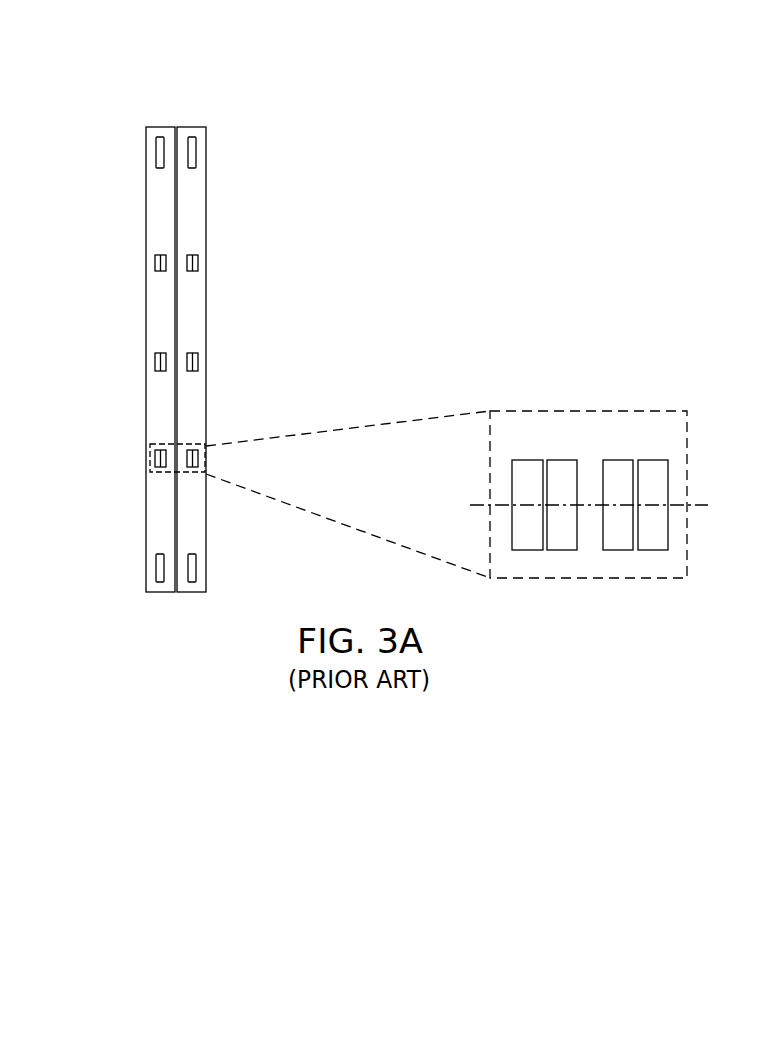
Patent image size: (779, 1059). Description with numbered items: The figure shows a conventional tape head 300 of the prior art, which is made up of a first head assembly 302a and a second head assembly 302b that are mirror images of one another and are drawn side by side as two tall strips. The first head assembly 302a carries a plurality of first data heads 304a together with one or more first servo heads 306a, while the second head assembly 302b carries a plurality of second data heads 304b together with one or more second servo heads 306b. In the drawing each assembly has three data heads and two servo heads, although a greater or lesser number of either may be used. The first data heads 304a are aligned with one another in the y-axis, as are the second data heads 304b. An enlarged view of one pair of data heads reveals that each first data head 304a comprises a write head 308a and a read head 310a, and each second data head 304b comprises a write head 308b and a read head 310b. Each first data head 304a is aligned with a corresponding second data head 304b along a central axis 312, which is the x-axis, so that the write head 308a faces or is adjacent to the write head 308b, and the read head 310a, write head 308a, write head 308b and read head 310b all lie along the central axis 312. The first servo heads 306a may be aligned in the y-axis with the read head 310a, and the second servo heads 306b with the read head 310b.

The conventional tape head 300 is at (133, 100).
The first head assembly 302a is at (133, 207).
The second head assembly 302b is at (242, 359).
The first data heads 304a is at (155, 262).
The second data heads 304b is at (198, 262).
The first servo heads 306a is at (156, 157).
The second servo heads 306b is at (196, 157).
The write head 308a is at (560, 470).
The write head 308b is at (620, 470).
The read head 310a is at (520, 475).
The read head 310b is at (657, 477).
The central axis 312 is at (610, 504).